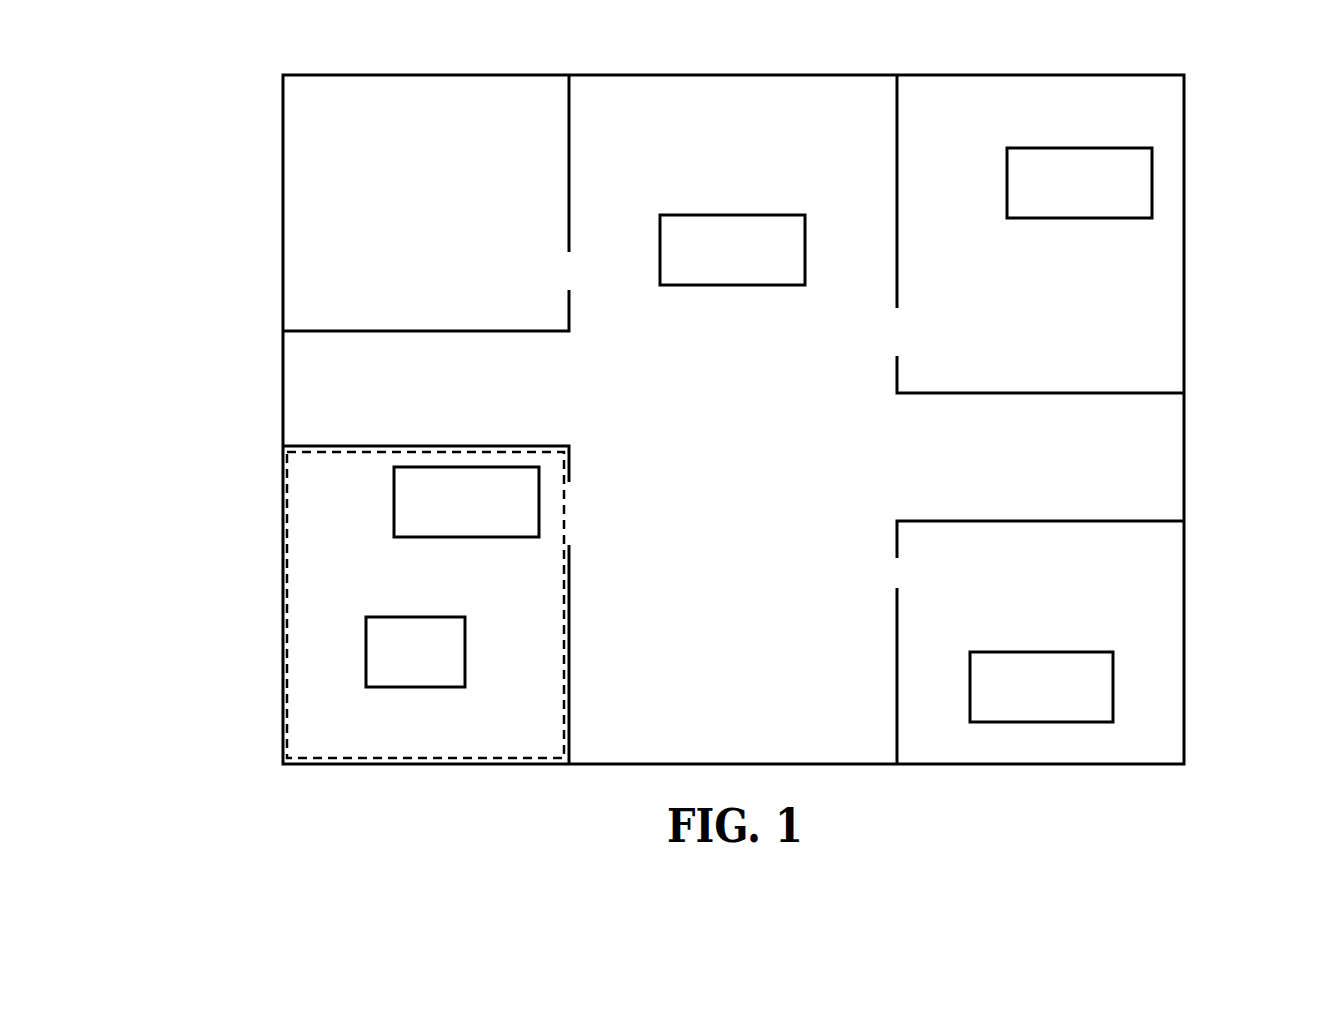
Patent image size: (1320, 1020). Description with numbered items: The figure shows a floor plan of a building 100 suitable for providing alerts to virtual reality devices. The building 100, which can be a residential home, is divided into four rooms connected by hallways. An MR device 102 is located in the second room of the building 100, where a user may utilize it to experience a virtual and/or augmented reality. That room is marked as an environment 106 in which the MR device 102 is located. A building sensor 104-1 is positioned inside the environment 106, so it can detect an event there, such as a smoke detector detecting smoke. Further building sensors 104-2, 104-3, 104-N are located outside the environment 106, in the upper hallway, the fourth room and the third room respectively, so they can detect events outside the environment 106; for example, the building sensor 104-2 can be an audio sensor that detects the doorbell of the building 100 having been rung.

The building 100 is at (226, 82).
The MR device 102 is at (366, 650).
The building sensor 104-1 is at (480, 467).
The building sensor 104-2 is at (728, 285).
The building sensor 104-3 is at (1152, 176).
The building sensor 104-N is at (1113, 683).
The environment 106 is at (288, 527).